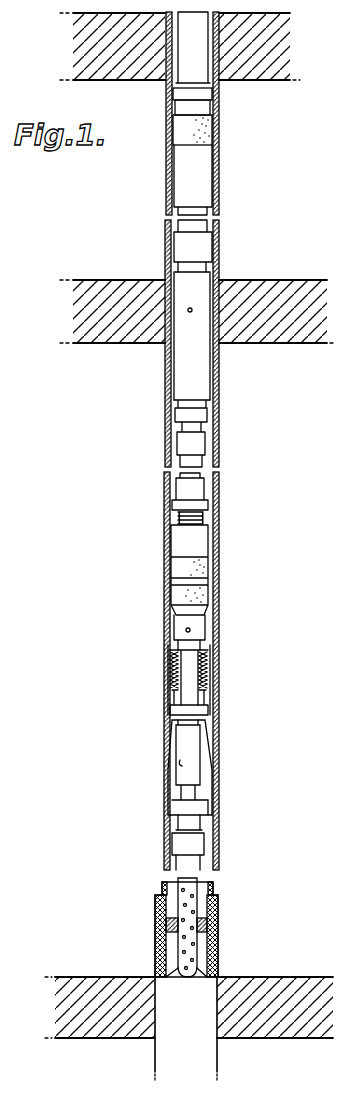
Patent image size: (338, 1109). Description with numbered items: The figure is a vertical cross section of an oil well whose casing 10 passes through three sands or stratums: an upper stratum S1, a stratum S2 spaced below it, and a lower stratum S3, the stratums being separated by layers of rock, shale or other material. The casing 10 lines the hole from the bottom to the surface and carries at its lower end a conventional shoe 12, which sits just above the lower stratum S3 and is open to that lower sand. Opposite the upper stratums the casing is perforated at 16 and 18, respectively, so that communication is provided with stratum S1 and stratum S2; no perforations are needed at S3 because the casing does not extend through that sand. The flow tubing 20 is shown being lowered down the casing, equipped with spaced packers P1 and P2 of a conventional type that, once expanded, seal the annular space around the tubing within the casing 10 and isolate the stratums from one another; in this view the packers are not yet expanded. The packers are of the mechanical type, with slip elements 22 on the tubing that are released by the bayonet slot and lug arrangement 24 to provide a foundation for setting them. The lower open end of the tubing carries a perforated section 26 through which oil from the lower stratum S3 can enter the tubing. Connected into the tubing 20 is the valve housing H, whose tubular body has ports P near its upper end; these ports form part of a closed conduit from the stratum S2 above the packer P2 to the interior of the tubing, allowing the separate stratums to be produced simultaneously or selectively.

The upper sand or stratum S1 is at (278, 72).
The sand or stratum S2 is at (266, 290).
The lower sand or stratum S3 is at (266, 985).
The casing 10 is at (218, 493).
The shoe 12 is at (218, 938).
The perforations 16 is at (187, 66).
The perforations 18 is at (158, 345).
The flow tubing 20 is at (172, 94).
The slip elements 22 is at (213, 677).
The bayonet slot and lug arrangement 24 is at (214, 742).
The perforated section 26 is at (198, 893).
The ports P is at (192, 308).
The packer P1 is at (213, 132).
The packer P2 is at (208, 598).
The valve housing H is at (203, 390).